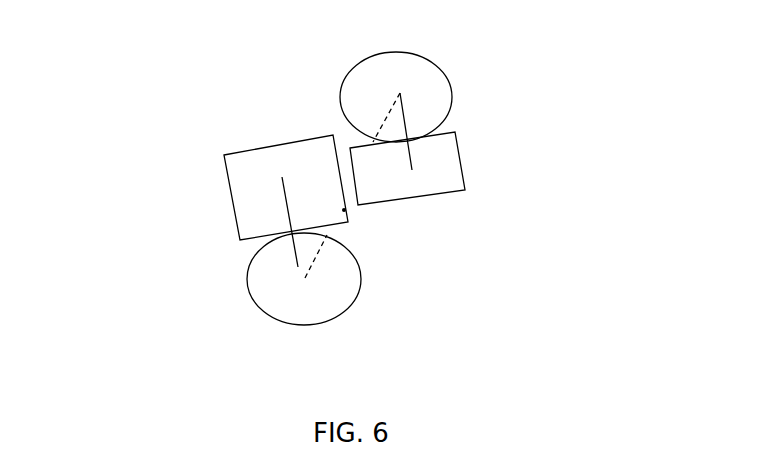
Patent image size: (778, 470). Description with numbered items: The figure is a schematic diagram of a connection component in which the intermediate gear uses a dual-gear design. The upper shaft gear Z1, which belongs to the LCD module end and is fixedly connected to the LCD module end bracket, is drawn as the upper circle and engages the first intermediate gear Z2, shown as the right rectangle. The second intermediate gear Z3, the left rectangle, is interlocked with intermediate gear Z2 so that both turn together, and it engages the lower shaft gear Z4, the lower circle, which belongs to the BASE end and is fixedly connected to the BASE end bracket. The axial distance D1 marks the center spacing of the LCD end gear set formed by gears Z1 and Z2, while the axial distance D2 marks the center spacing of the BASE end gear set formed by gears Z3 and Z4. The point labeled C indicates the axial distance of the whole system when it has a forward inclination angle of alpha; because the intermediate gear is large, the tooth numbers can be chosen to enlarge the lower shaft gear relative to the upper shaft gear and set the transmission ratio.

The upper shaft gear Z1 is at (448, 77).
The intermediate gear Z2 is at (449, 171).
The intermediate gear Z3 is at (259, 193).
The lower shaft gear Z4 is at (344, 305).
The axial distance of the LCD end gear set D1 is at (413, 125).
The axial distance of the BASE end gear set D2 is at (277, 232).
The axial distance of the system C is at (353, 207).